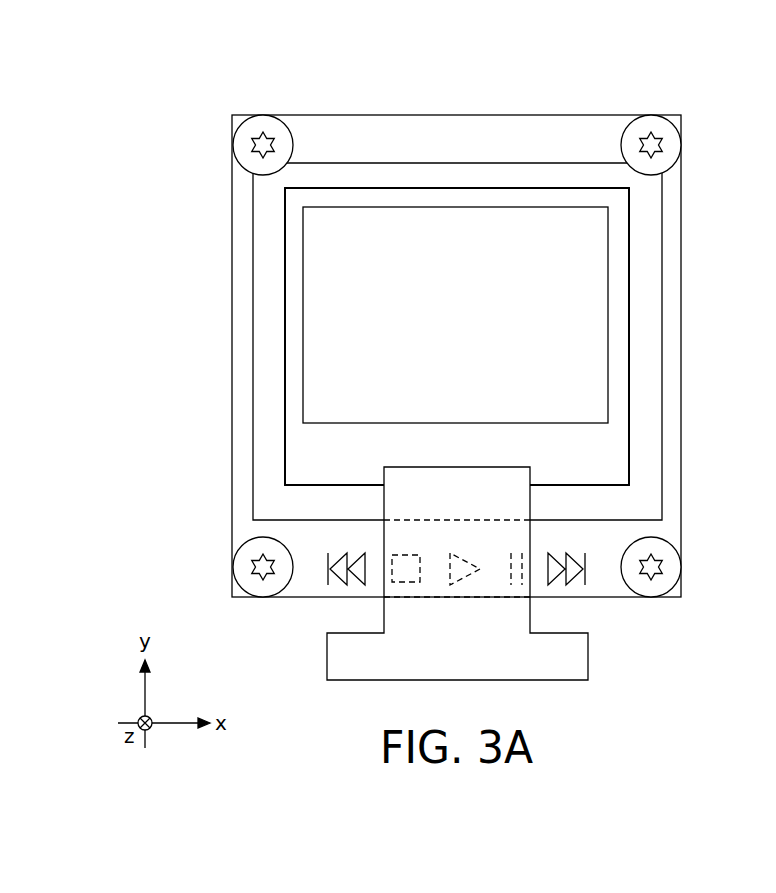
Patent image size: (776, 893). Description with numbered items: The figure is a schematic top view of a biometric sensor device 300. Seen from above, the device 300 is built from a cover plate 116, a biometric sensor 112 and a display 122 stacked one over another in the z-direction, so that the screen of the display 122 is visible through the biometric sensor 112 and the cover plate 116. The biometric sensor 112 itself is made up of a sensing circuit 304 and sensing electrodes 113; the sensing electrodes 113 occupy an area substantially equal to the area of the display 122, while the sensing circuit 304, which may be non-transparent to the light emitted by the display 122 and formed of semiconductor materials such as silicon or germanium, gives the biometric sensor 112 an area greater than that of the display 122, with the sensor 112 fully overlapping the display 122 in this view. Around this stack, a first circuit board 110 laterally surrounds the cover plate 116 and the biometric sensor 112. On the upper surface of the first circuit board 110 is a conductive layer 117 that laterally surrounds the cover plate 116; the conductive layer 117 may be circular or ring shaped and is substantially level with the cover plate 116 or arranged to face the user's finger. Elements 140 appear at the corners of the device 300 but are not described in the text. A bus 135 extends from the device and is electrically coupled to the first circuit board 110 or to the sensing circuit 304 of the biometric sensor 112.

The biometric sensor device 300 is at (426, 357).
The first circuit board 110 is at (681, 330).
The biometric sensor 112 is at (426, 259).
The cover plate 116 is at (457, 259).
The display 122 is at (457, 259).
The conductive layer 117 is at (643, 268).
The sensing electrodes 113 is at (320, 397).
The sensing circuit 304 is at (318, 457).
The speakers 140 is at (243, 143).
The bus 135 is at (577, 658).